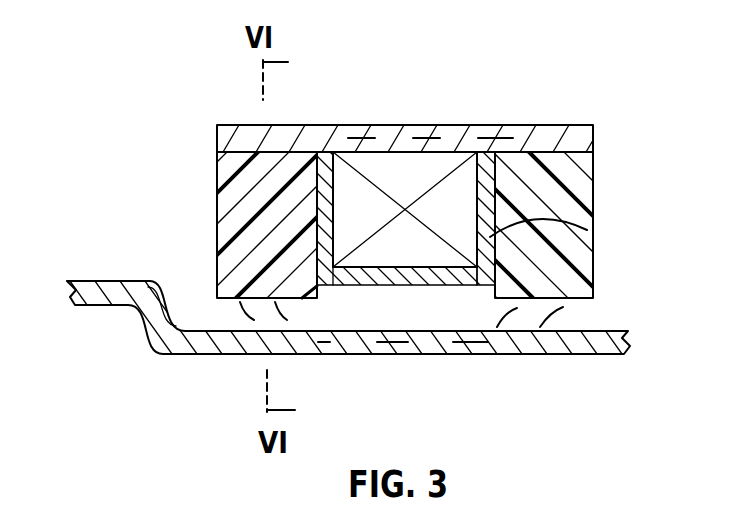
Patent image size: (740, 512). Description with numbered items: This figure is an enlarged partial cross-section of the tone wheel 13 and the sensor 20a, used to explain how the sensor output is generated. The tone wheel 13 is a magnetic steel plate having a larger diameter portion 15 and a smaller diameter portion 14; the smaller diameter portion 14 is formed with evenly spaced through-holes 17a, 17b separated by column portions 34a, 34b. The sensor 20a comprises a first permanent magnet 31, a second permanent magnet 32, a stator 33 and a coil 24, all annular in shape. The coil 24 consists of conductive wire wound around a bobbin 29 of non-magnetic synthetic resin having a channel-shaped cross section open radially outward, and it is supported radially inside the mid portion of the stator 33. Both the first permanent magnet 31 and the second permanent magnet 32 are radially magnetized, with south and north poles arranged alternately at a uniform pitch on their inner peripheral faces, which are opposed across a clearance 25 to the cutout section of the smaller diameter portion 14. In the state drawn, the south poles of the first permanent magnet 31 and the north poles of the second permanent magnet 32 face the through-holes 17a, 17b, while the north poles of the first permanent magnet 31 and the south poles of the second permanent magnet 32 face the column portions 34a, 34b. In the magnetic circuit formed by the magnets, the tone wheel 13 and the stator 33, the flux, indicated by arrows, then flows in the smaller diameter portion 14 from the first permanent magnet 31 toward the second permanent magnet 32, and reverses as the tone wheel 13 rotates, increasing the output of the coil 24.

The tone wheel 13 is at (125, 280).
The smaller diameter portion 14 is at (592, 333).
The larger diameter portion 15 is at (88, 280).
The through-holes 17a is at (216, 340).
The through-holes 17b is at (592, 340).
The sensor 20a is at (523, 116).
The coil 24 is at (392, 172).
The clearance 25 is at (292, 335).
The bobbin 29 is at (587, 230).
The first permanent magnet 31 is at (233, 162).
The second permanent magnet 32 is at (578, 182).
The stator 33 is at (452, 126).
The column portions 34a is at (245, 327).
The column portions 34b is at (585, 330).